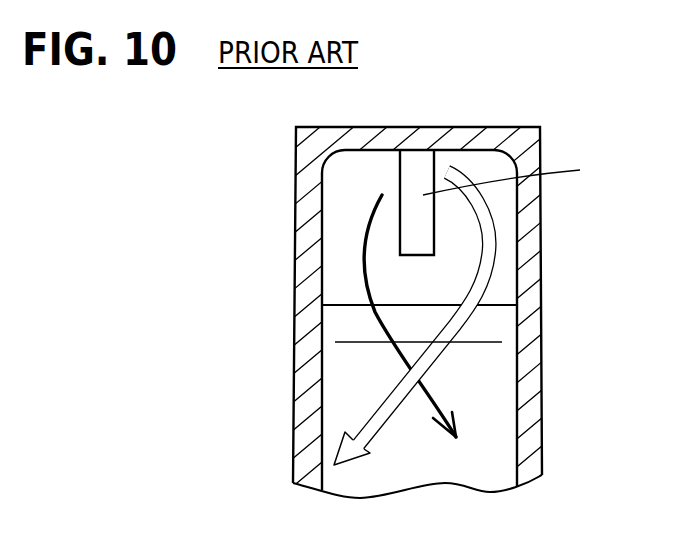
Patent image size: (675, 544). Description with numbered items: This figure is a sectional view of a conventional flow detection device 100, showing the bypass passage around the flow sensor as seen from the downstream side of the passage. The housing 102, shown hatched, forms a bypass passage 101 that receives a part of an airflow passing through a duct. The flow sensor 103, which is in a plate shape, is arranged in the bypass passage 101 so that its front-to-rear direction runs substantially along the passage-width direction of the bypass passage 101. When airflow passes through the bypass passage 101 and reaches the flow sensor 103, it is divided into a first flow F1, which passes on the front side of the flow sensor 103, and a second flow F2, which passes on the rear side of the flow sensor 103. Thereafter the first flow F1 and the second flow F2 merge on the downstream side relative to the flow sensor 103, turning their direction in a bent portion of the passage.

The flow detection device 100 is at (571, 89).
The bypass passage 101 is at (338, 182).
The housing 102 is at (530, 203).
The flow sensor 103 is at (423, 195).
The first flow F1 is at (362, 260).
The second flow F2 is at (485, 265).